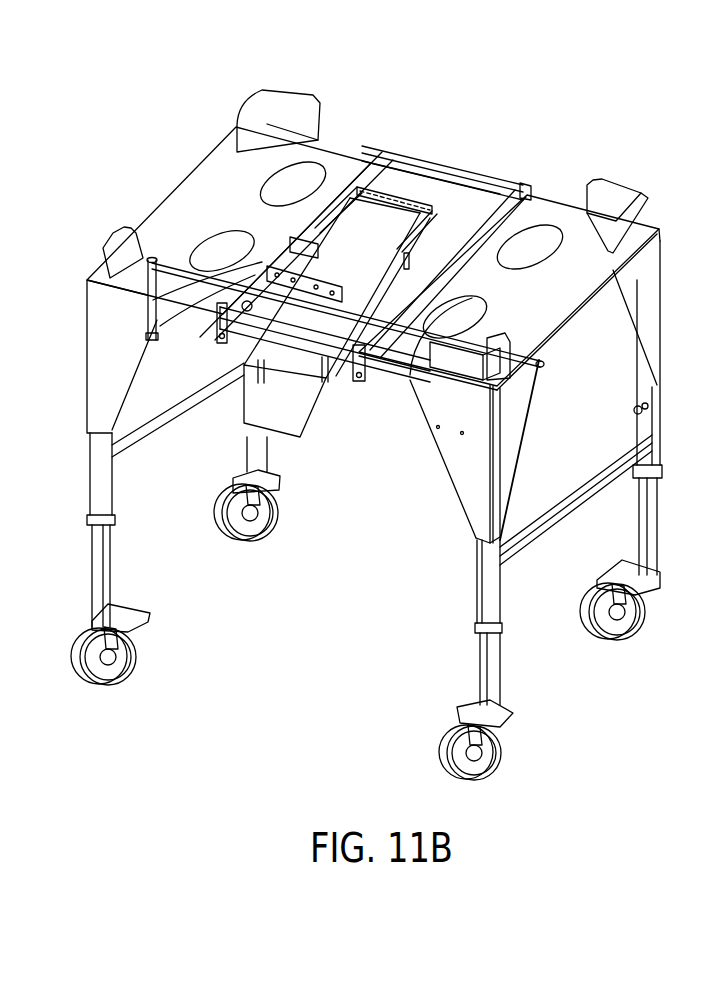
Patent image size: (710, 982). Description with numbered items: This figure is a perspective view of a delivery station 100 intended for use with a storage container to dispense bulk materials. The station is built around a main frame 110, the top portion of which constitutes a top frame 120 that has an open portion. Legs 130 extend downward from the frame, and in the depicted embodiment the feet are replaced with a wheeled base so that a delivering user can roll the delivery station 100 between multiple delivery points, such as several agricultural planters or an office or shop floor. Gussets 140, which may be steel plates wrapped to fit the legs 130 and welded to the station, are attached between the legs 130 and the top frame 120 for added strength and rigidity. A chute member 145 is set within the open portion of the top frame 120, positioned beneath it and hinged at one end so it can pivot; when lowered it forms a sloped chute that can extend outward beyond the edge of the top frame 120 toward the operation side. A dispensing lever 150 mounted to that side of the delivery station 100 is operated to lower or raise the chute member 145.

The delivery station 100 is at (389, 426).
The main frame 110 is at (552, 195).
The top frame 120 is at (641, 191).
The legs 130 is at (500, 666).
The gussets 140 is at (520, 446).
The chute member 145 is at (310, 423).
The dispensing lever 150 is at (404, 376).